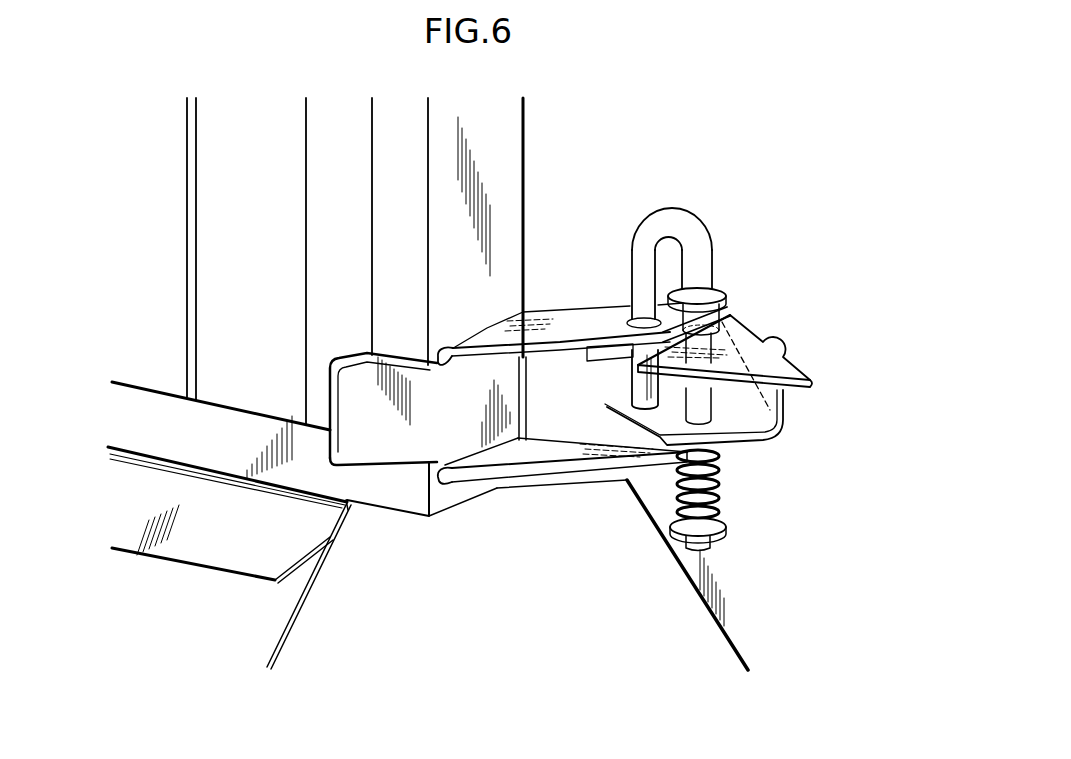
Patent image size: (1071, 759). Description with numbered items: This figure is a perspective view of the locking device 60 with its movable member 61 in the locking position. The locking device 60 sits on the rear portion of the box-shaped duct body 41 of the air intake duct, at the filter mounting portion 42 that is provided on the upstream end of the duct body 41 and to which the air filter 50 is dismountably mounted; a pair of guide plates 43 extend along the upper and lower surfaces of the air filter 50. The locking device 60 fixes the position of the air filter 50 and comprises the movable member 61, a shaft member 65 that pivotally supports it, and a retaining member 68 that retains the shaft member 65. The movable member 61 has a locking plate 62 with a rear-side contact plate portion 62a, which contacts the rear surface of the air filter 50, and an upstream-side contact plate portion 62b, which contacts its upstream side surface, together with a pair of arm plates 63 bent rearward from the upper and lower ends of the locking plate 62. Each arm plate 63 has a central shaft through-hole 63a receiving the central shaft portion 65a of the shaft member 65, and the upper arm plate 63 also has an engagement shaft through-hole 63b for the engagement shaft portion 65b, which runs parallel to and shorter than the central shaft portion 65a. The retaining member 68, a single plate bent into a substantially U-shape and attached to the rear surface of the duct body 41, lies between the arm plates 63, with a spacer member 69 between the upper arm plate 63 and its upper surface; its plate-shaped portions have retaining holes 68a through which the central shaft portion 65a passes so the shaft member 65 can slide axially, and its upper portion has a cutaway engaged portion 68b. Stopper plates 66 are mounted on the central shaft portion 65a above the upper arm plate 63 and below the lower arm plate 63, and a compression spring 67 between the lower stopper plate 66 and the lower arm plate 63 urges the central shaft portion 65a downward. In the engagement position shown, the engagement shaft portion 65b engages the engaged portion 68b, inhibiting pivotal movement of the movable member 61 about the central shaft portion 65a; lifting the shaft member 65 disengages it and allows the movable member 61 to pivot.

The duct body 41 is at (740, 640).
The filter mounting portion 42 is at (405, 542).
The guide plates 43 is at (348, 505).
The air filter 50 is at (503, 191).
The locking device 60 is at (808, 203).
The movable member 61 is at (530, 490).
The locking plate 62 is at (383, 409).
The rear-side contact plate portion 62a is at (468, 438).
The upstream-side contact plate portion 62b is at (405, 437).
The arm plates 63 is at (575, 330).
The central shaft through-hole 63a is at (700, 294).
The engagement shaft through-hole 63b is at (637, 323).
The shaft member 65 is at (704, 217).
The central shaft portion 65a is at (707, 258).
The engagement shaft portion 65b is at (607, 407).
The stopper plates 66 is at (727, 302).
The compression spring 67 is at (721, 490).
The retaining member 68 is at (788, 370).
The retaining hole 68a is at (770, 410).
The engaged portion 68b is at (627, 378).
The spacer member 69 is at (732, 320).